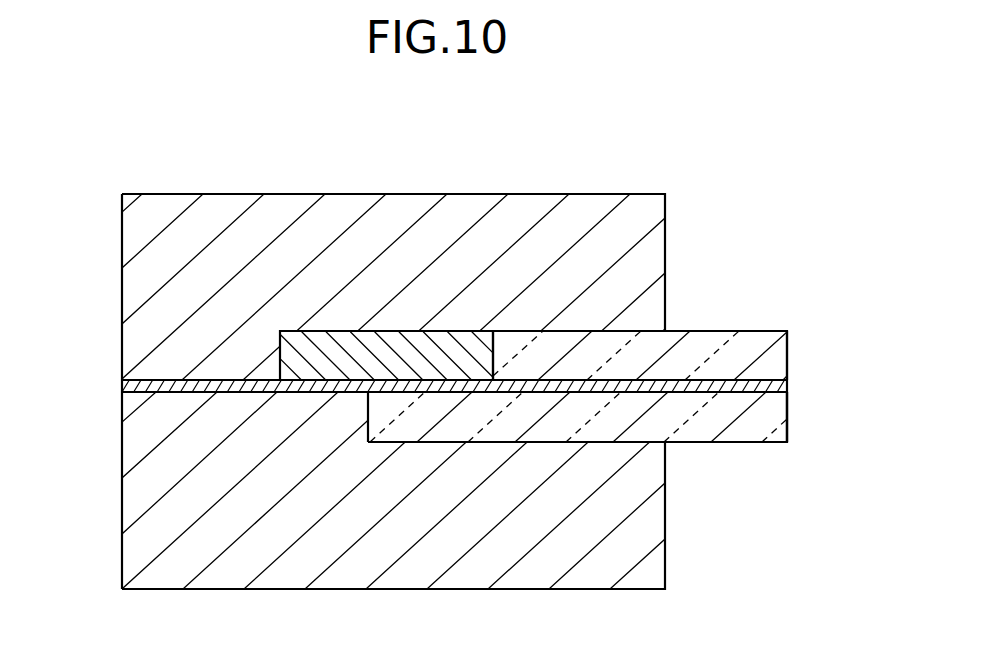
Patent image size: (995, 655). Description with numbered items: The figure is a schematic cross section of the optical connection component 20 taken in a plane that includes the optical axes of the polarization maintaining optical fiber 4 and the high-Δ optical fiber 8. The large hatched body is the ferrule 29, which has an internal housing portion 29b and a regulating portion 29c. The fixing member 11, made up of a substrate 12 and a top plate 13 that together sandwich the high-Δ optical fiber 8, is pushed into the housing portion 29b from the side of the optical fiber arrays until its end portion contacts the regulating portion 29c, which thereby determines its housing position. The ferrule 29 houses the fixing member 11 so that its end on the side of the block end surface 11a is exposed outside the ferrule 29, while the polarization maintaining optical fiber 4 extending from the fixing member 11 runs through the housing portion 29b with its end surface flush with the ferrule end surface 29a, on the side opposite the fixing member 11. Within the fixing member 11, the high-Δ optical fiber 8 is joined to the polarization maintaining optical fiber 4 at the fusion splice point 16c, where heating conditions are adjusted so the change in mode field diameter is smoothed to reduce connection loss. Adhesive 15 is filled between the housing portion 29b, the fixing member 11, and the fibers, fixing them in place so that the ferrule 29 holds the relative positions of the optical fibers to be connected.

The optical connection component 20 is at (736, 134).
The ferrule 29 is at (163, 194).
The ferrule end surface 29a is at (110, 572).
The housing portion 29b is at (416, 338).
The regulating portion 29c is at (372, 419).
The adhesive 15 is at (315, 353).
The polarization maintaining optical fiber 4 is at (257, 393).
The fusion splice point 16c is at (580, 390).
The fixing member 11 is at (778, 264).
The block end surface 11a is at (799, 423).
The top plate 13 is at (739, 331).
The substrate 12 is at (714, 433).
The high-Δ optical fiber 8 is at (760, 395).